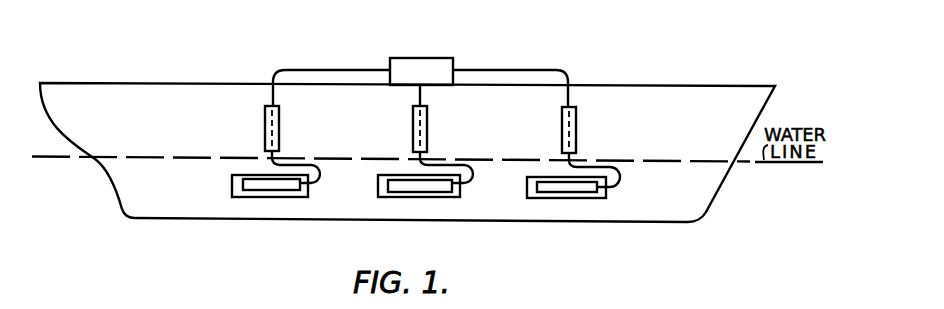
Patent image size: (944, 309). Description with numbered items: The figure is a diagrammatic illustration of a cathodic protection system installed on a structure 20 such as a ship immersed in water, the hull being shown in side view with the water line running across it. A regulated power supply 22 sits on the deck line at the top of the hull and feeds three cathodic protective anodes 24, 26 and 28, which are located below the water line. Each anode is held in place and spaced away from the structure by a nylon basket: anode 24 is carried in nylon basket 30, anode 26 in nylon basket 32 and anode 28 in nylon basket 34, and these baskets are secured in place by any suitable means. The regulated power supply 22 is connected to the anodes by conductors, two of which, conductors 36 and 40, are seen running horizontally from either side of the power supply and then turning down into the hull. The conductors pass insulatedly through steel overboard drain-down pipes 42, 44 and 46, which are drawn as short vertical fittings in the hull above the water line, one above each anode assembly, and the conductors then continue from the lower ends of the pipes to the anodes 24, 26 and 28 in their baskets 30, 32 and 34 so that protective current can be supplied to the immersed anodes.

The structure 20 is at (690, 92).
The regulated power supply 22 is at (438, 63).
The cathodic protective anode 24 is at (249, 183).
The cathodic protective anode 26 is at (398, 183).
The cathodic protective anode 28 is at (546, 183).
The nylon basket 30 is at (308, 192).
The nylon basket 32 is at (460, 195).
The nylon basket 34 is at (606, 196).
The conductor 36 is at (319, 68).
The conductor 40 is at (527, 71).
The steel overboard drain-down pipe 42 is at (265, 118).
The steel overboard drain-down pipe 44 is at (413, 118).
The steel overboard drain-down pipe 46 is at (562, 118).